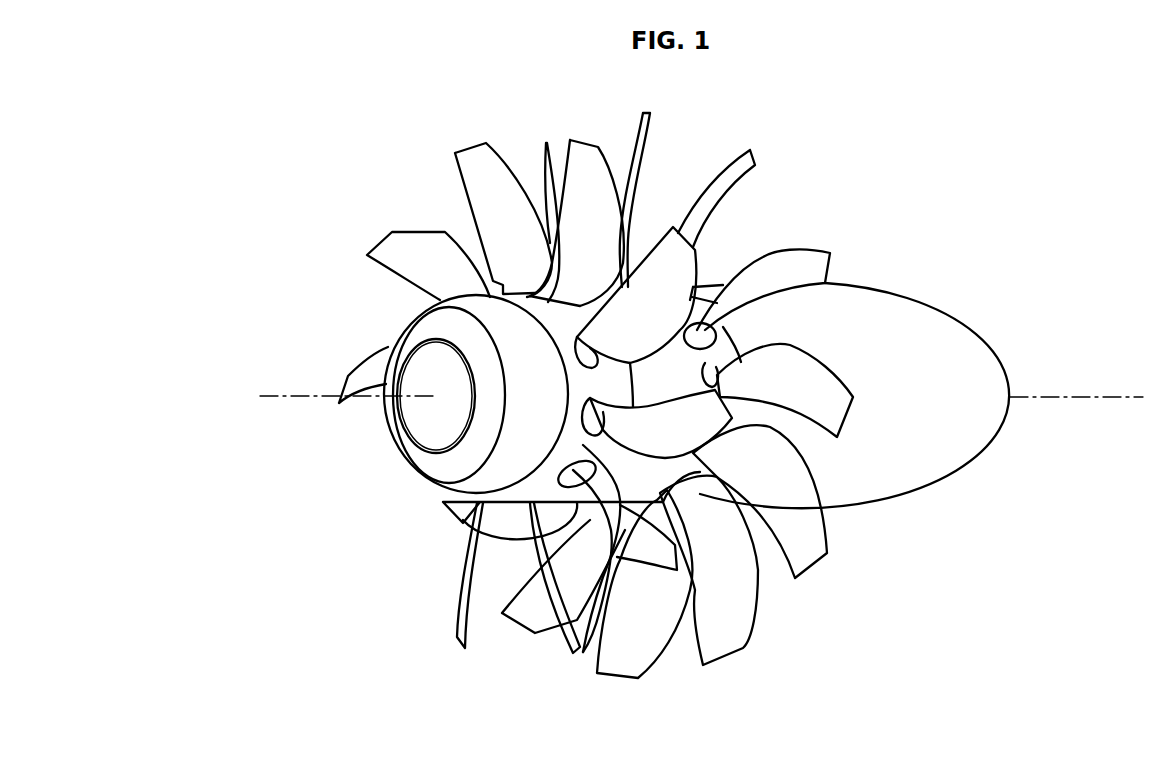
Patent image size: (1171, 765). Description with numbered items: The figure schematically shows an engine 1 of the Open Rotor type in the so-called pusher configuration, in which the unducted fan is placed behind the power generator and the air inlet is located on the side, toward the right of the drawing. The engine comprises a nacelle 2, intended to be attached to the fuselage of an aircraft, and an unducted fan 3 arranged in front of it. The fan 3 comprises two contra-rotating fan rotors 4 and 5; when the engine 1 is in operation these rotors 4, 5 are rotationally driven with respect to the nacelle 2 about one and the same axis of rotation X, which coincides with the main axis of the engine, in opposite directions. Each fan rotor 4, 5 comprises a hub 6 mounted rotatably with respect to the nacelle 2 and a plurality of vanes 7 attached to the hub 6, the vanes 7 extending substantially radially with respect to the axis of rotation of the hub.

The engine 1 is at (922, 238).
The nacelle 2 is at (951, 345).
The unducted fan 3 is at (468, 128).
The fan rotor 4 is at (415, 225).
The fan rotor 5 is at (712, 168).
The hub 6 is at (582, 657).
The vanes 7 is at (507, 180).
The axis of rotation X is at (1082, 395).